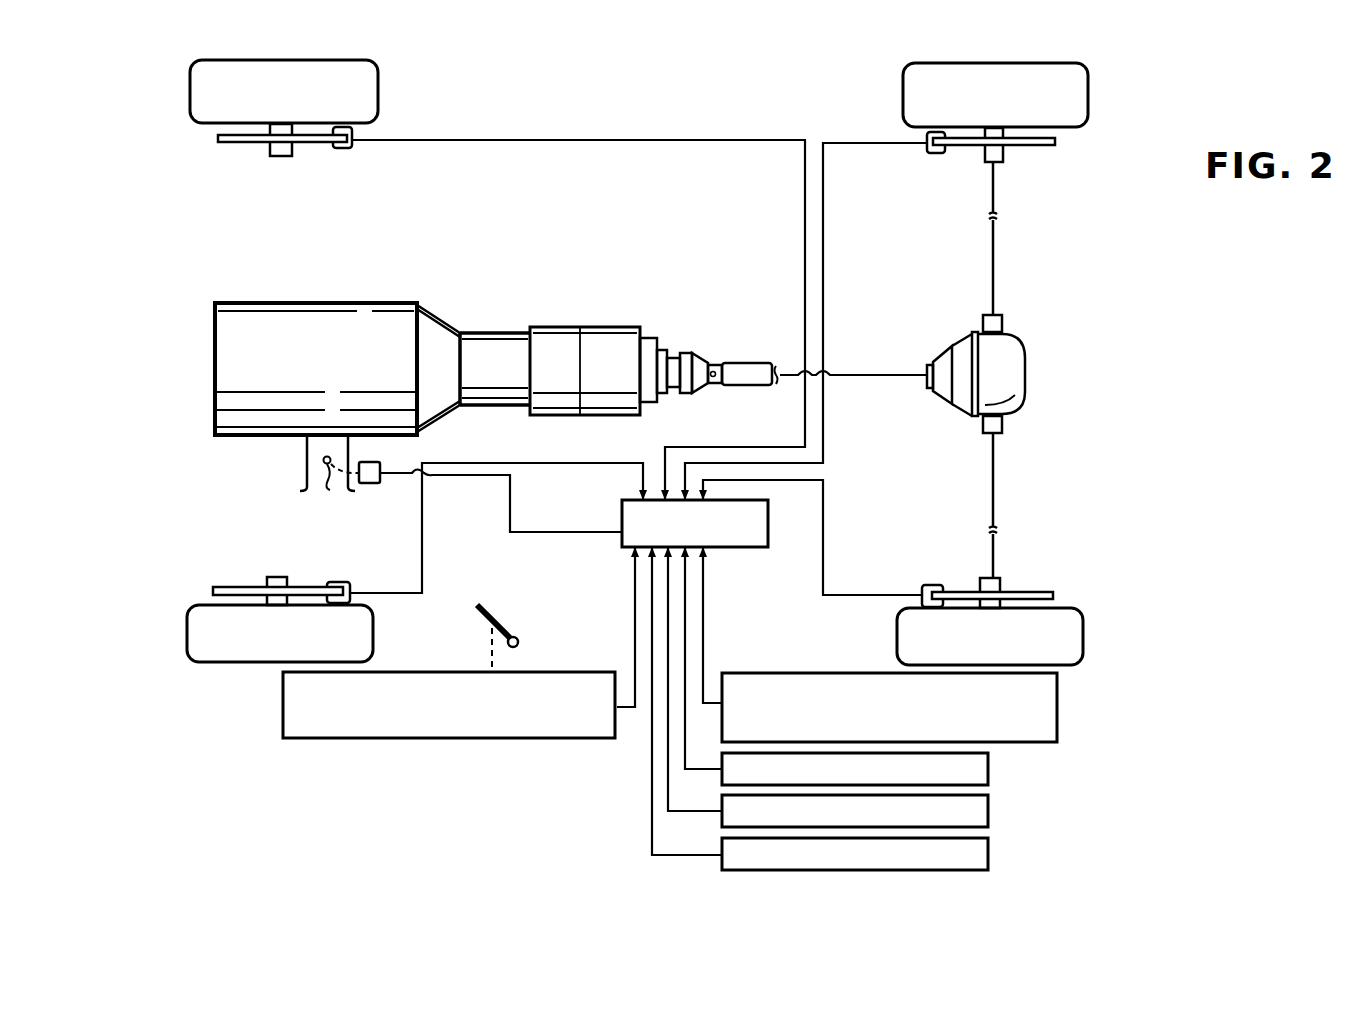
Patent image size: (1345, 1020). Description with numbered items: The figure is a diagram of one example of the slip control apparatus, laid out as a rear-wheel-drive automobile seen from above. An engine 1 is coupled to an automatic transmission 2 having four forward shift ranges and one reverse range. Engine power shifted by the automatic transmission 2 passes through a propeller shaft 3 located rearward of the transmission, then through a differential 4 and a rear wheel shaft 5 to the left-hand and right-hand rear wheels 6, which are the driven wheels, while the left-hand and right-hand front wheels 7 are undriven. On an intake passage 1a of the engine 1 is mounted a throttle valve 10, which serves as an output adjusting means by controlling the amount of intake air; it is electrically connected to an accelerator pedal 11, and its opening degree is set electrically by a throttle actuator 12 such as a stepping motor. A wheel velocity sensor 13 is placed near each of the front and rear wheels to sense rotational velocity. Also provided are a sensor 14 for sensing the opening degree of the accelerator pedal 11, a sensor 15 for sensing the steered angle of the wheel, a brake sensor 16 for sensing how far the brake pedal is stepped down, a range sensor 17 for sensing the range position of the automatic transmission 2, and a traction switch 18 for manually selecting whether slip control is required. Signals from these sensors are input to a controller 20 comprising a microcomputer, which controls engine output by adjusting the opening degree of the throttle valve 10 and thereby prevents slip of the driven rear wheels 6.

The engine 1 is at (297, 302).
The intake passage 1a is at (305, 466).
The automatic transmission 2 is at (497, 394).
The propeller shaft 3 is at (746, 362).
The differential 4 is at (1027, 393).
The rear wheel shaft 5 is at (993, 276).
The rear wheel 6 is at (1088, 105).
The front wheel 7 is at (190, 93).
The throttle valve 10 is at (331, 491).
The accelerator pedal 11 is at (505, 626).
The throttle actuator 12 is at (369, 486).
The wheel velocity sensor 13 is at (340, 149).
The sensor for sensing an opening degree 14 is at (500, 740).
The sensor for sensing a steered angle 15 is at (1058, 705).
The brake sensor 16 is at (988, 770).
The range sensor 17 is at (988, 812).
The traction switch 18 is at (988, 855).
The controller 20 is at (742, 550).